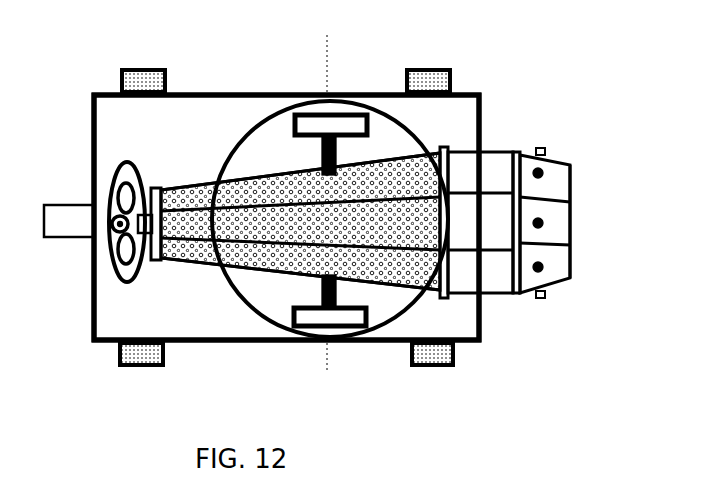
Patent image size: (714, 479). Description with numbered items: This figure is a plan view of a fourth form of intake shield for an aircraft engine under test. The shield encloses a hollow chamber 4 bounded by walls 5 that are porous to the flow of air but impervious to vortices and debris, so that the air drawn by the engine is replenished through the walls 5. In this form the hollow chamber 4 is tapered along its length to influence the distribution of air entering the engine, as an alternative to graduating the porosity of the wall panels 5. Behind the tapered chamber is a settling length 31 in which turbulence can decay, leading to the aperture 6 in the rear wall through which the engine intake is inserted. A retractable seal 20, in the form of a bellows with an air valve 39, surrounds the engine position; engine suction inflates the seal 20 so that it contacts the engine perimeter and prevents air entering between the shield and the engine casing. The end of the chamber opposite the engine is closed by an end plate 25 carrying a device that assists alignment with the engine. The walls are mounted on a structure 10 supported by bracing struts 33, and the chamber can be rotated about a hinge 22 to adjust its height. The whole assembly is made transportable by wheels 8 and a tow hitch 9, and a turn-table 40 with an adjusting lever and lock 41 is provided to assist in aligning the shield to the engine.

The hollow chamber 4 is at (395, 160).
The walls 5 is at (254, 176).
The aperture 6 is at (577, 212).
The wheels 8 is at (453, 365).
The tow hitch 9 is at (63, 213).
The structure 10 is at (373, 90).
The retractable seal 20 is at (557, 180).
The hinge 22 is at (320, 90).
The end plate 25 is at (155, 185).
The settling length 31 is at (473, 177).
The bracing struts 33 is at (286, 184).
The air valve 39 is at (547, 297).
The turn-table 40 is at (382, 300).
The adjusting lever and lock 41 is at (133, 278).